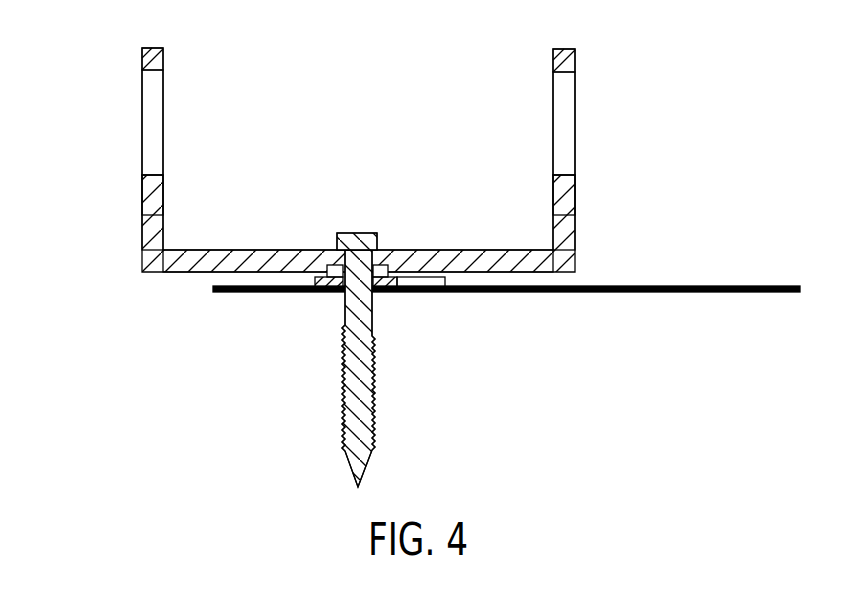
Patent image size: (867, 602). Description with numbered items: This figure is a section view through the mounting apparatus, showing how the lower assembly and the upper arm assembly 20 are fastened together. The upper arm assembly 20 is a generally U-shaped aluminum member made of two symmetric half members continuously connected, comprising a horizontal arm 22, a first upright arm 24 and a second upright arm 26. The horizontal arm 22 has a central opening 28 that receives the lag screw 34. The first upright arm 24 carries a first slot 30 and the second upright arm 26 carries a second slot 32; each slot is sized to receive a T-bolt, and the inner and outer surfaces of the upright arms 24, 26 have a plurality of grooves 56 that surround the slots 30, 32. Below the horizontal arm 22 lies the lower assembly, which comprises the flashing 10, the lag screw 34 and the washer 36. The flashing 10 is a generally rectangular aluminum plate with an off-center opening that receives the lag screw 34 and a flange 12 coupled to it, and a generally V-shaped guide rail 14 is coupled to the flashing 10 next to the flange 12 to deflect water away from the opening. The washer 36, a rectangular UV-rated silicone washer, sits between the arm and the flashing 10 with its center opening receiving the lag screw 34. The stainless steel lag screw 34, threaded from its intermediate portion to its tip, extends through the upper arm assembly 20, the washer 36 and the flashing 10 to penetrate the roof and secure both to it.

The flashing 10 is at (242, 293).
The flange 12 is at (346, 328).
The guide rail 14 is at (432, 290).
The upper arm assembly 20 is at (358, 203).
The horizontal arm 22 is at (497, 250).
The first upright arm 24 is at (152, 193).
The second upright arm 26 is at (567, 190).
The central opening 28 is at (334, 252).
The first slot 30 is at (146, 118).
The second slot 32 is at (566, 118).
The lag screw 34 is at (368, 235).
The washer 36 is at (390, 290).
The grooves 56 is at (143, 69).